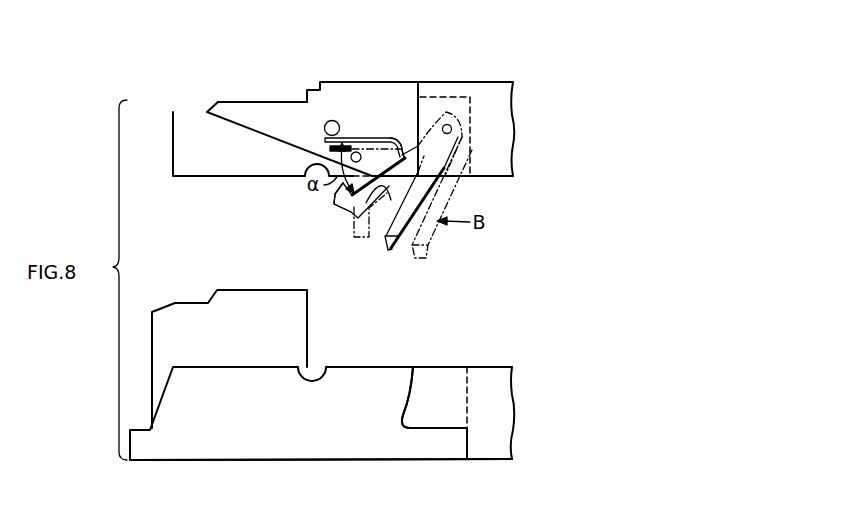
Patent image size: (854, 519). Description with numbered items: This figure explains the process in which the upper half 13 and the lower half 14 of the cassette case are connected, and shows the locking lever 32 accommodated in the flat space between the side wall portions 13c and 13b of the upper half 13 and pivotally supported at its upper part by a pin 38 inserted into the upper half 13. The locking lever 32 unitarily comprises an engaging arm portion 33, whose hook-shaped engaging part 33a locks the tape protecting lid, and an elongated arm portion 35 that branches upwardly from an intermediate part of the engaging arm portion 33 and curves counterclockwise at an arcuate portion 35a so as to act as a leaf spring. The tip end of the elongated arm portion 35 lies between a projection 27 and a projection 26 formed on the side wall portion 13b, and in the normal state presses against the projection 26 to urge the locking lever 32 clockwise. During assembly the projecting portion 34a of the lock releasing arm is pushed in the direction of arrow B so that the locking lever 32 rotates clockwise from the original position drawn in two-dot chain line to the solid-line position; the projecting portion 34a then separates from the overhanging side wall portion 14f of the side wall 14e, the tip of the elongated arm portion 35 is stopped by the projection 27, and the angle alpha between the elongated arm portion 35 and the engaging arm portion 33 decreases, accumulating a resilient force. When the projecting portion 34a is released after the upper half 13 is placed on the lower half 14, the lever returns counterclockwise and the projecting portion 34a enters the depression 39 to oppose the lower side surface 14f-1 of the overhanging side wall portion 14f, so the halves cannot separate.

The upper half 13 is at (485, 80).
The side wall portion 13b is at (273, 104).
The side wall portion 13c is at (436, 100).
The lower half 14 is at (364, 367).
The side wall 14e is at (278, 455).
The overhanging side wall portion 14f is at (447, 378).
The lower side surface 14f-1 is at (427, 430).
The projection 26 is at (350, 157).
The projection 27 is at (324, 128).
The locking lever 32 is at (442, 196).
The engaging arm portion 33 is at (362, 208).
The engaging part 33a is at (337, 211).
The projecting portion 34a is at (391, 251).
The elongated arm portion 35 is at (368, 137).
The arcuate portion 35a is at (402, 133).
The pin 38 is at (452, 129).
The depression 39 is at (452, 453).